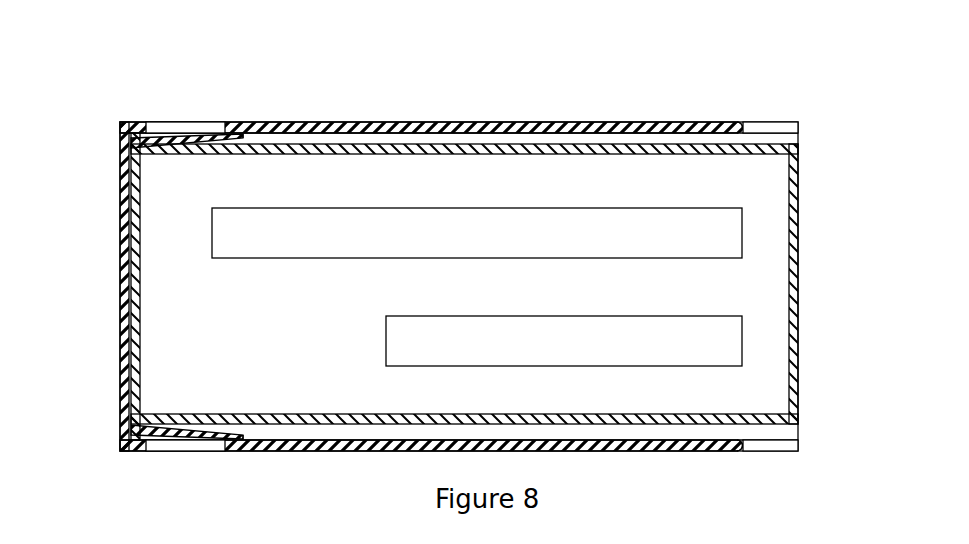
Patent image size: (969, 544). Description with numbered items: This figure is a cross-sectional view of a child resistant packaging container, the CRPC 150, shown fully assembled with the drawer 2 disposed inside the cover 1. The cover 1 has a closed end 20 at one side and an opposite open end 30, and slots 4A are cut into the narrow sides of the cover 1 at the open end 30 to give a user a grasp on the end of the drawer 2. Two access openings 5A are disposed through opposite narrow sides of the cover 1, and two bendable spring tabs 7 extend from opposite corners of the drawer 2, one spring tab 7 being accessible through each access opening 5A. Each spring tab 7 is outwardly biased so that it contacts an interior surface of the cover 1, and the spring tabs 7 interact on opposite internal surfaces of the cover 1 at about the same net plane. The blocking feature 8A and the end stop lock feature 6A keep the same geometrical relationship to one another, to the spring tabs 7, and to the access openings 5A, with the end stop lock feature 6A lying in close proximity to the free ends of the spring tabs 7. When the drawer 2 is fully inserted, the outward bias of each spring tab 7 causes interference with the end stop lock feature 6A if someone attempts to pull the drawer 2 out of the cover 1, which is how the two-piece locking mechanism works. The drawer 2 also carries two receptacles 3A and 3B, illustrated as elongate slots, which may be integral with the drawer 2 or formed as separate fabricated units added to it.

The CRPC 150 is at (647, 90).
The open end 30 is at (800, 128).
The cover 1 is at (350, 446).
The drawer 2 is at (312, 414).
The closed end 20 is at (122, 270).
The access openings 5A is at (167, 128).
The blocking feature 8A is at (740, 134).
The slots 4A is at (781, 128).
The spring tabs 7 is at (178, 142).
The end stop lock feature 6A is at (249, 134).
The receptacle 3A is at (461, 248).
The receptacle 3B is at (581, 356).